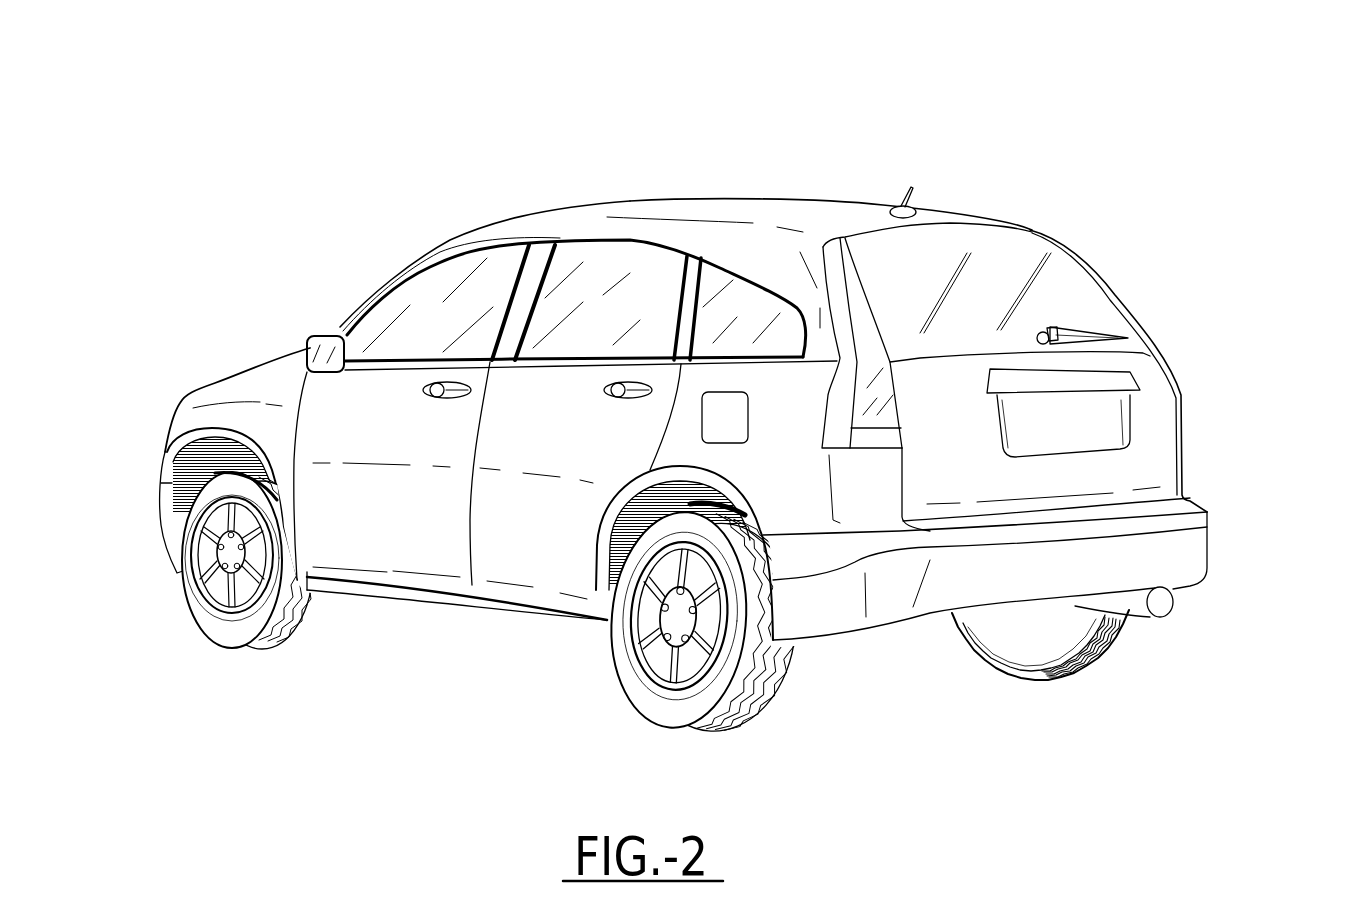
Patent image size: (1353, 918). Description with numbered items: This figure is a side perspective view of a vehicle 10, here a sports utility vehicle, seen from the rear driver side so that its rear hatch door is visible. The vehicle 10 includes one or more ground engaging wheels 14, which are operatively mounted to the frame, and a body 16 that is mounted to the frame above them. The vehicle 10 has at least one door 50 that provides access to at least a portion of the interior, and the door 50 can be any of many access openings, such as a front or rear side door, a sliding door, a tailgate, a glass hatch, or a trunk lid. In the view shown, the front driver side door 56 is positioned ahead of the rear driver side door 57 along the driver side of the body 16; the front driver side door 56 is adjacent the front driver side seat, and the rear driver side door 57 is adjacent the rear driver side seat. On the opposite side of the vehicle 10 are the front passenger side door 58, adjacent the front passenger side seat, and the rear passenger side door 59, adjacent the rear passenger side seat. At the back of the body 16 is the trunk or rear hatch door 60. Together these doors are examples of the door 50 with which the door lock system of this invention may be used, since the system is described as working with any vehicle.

The vehicle 10 is at (737, 432).
The ground engaging wheel 14 is at (217, 627).
The body 16 is at (758, 217).
The door 50 is at (365, 537).
The front driver side door 56 is at (412, 545).
The rear driver side door 57 is at (555, 568).
The front passenger side door 58 is at (590, 203).
The rear passenger side door 59 is at (932, 200).
The rear hatch door 60 is at (1163, 437).